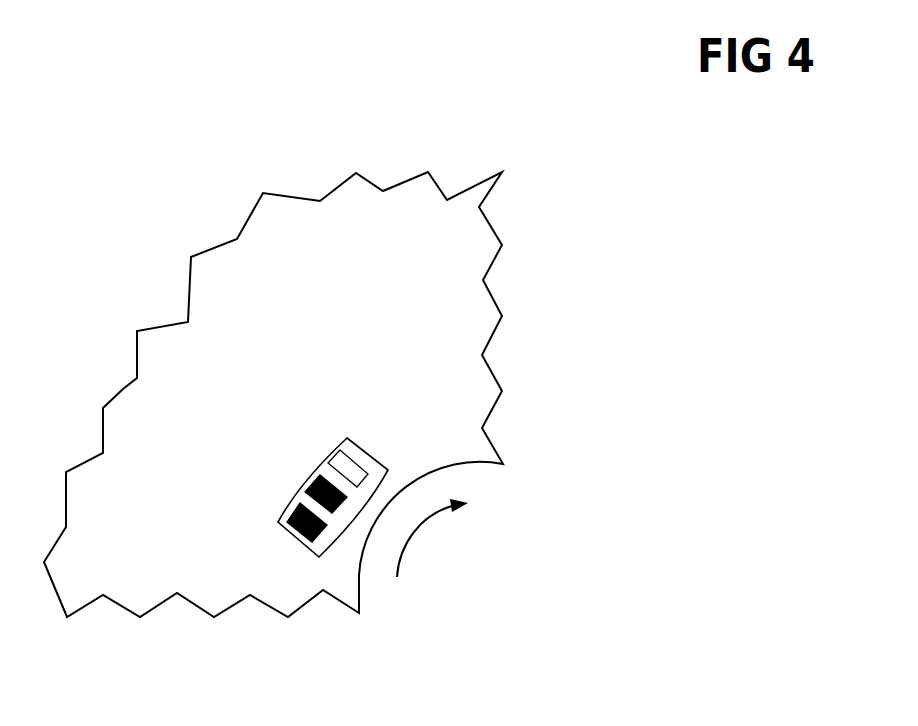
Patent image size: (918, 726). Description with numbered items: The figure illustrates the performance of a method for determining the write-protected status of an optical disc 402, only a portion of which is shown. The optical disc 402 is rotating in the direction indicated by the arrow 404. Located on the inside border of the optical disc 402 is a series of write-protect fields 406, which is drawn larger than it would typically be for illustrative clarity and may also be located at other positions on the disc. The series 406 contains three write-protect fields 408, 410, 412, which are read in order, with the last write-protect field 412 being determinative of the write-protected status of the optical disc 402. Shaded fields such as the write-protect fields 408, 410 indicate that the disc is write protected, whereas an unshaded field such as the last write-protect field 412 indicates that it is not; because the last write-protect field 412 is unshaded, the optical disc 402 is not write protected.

The optical disc 402 is at (124, 580).
The arrow 404 is at (402, 552).
The series of write-protect fields 406 is at (278, 531).
The write-protect field 408 is at (292, 500).
The write-protect field 410 is at (308, 473).
The last write-protect field 412 is at (325, 451).